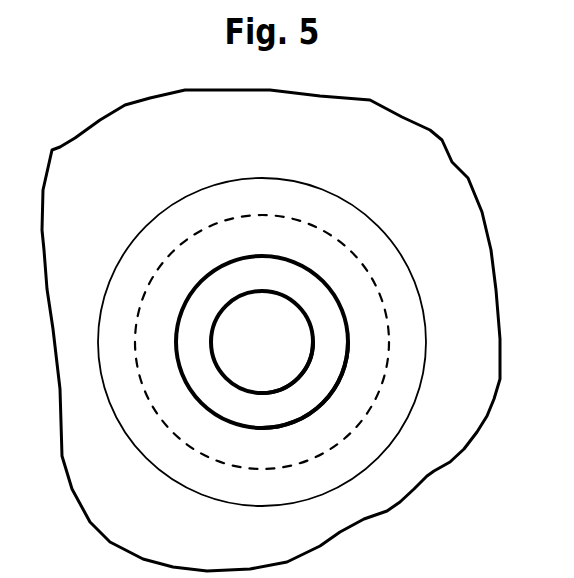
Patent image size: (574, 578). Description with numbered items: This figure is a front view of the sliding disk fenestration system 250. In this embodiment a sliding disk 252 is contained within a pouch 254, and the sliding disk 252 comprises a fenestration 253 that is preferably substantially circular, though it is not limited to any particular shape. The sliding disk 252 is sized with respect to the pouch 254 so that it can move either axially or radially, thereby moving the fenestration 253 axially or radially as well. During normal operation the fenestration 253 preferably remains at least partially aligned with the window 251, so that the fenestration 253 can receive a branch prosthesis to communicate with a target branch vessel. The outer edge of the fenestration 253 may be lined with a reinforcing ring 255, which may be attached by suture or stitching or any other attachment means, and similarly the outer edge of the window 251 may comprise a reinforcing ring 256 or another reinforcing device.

The sliding disk fenestration system 250 is at (120, 197).
The window 251 is at (178, 350).
The sliding disk 252 is at (362, 417).
The fenestration 253 is at (278, 293).
The pouch 254 is at (417, 286).
The reinforcing ring 255 is at (283, 393).
The reinforcing ring 256 is at (347, 371).